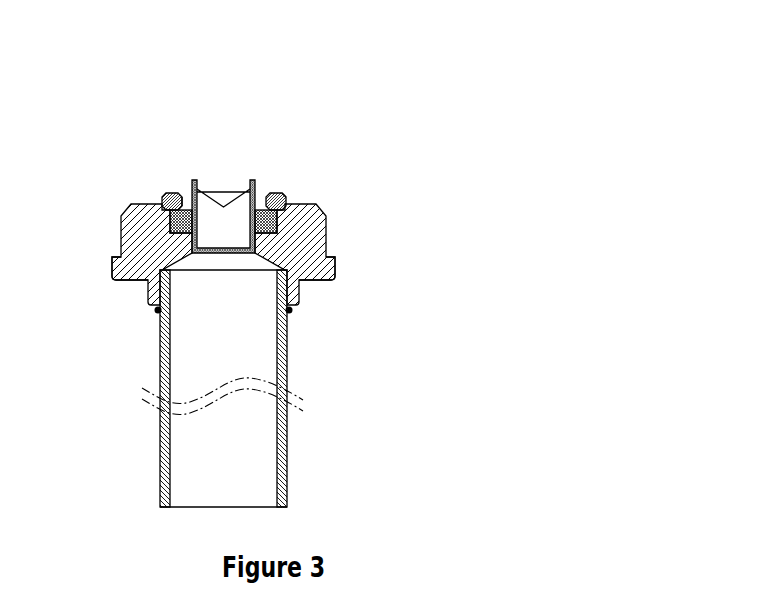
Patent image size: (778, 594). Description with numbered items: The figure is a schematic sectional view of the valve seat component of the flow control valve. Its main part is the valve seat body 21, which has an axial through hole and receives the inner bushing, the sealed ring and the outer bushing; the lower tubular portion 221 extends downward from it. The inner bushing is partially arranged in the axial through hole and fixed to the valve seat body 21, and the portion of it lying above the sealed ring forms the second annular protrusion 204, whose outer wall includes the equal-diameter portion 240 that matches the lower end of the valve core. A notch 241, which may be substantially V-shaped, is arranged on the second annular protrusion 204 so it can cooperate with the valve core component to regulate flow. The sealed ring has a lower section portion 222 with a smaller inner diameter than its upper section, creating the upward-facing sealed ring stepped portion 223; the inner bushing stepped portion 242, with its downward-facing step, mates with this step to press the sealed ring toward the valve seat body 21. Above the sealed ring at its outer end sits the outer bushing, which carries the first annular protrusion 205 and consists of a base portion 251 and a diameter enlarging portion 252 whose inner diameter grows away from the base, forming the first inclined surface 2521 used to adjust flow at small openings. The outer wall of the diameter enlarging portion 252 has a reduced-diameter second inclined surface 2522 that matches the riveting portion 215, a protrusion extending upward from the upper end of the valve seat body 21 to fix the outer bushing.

The valve seat body 21 is at (234, 260).
The nut body 221 is at (327, 240).
The lower section portion 222 is at (260, 218).
The sealed ring stepped portion 223 is at (178, 235).
The inner bushing stepped portion 242 is at (335, 272).
The equal-diameter portion 240 is at (300, 141).
The second annular protrusion 204 is at (300, 141).
The notch 241 is at (225, 193).
The riveting portion 215 is at (163, 192).
The first annular protrusion 205 is at (182, 205).
The first inclined surface 2521 is at (183, 192).
The base portion 251 is at (269, 206).
The diameter enlarging portion 252 is at (263, 235).
The second inclined surface 2522 is at (287, 192).